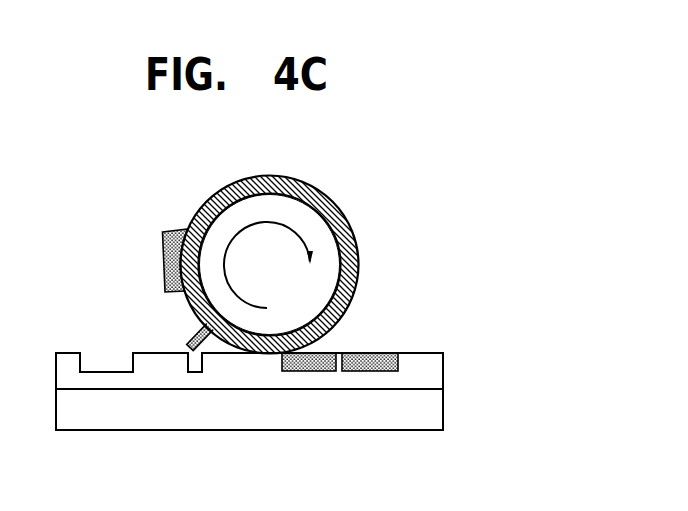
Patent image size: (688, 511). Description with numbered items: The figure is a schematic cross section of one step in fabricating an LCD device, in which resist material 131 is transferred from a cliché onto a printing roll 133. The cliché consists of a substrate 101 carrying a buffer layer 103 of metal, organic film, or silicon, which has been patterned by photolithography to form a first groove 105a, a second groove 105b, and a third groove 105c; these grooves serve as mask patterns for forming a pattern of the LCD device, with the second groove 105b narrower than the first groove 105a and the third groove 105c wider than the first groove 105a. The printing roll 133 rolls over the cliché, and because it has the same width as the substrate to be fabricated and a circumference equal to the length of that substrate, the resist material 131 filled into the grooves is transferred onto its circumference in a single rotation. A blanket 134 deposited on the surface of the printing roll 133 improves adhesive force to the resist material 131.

The resist material 131 is at (162, 259).
The printing roll 133 is at (332, 270).
The blanket 134 is at (350, 237).
The buffer layer 103 is at (438, 383).
The substrate 101 is at (438, 420).
The first groove 105a is at (105, 365).
The second groove 105b is at (193, 365).
The third groove 105c is at (308, 367).